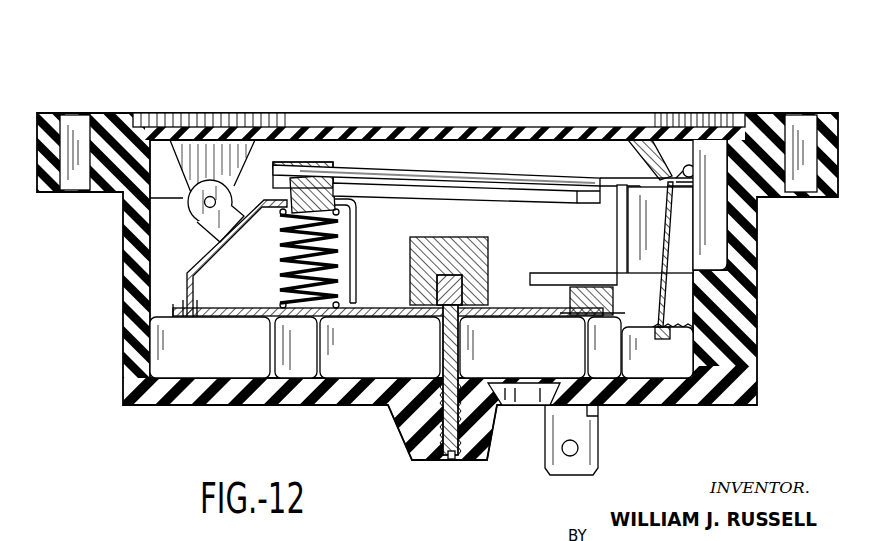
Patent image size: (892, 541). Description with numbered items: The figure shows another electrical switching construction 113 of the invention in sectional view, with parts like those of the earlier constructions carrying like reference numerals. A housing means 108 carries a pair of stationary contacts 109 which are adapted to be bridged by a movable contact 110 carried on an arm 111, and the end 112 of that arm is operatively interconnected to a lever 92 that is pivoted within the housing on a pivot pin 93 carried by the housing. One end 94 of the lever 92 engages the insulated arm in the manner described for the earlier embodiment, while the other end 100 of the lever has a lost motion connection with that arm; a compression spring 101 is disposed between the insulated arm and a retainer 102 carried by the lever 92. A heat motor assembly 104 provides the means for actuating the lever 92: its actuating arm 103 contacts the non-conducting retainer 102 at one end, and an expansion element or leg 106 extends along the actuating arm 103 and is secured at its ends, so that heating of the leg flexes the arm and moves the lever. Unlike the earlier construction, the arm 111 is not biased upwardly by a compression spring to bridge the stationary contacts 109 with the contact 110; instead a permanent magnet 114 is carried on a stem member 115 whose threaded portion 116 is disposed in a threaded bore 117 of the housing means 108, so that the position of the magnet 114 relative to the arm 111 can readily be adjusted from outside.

The lever 92 is at (214, 253).
The pivot pin 93 is at (210, 205).
The end of lever 94 is at (193, 322).
The other end of lever 100 is at (350, 258).
The compression spring 101 is at (342, 230).
The retainer 102 is at (345, 193).
The actuating arm 103 is at (292, 167).
The heat motor assembly 104 is at (516, 197).
The expansion element or leg 106 is at (474, 187).
The housing means 108 is at (759, 123).
The stationary contacts 109 is at (594, 290).
The movable contact 110 is at (572, 299).
The arm 111 is at (378, 307).
The end of arm 112 is at (178, 316).
The switching construction 113 is at (563, 90).
The permanent magnet 114 is at (478, 262).
The stem member 115 is at (448, 352).
The threaded portion 116 is at (470, 427).
The threaded bore 117 is at (440, 430).